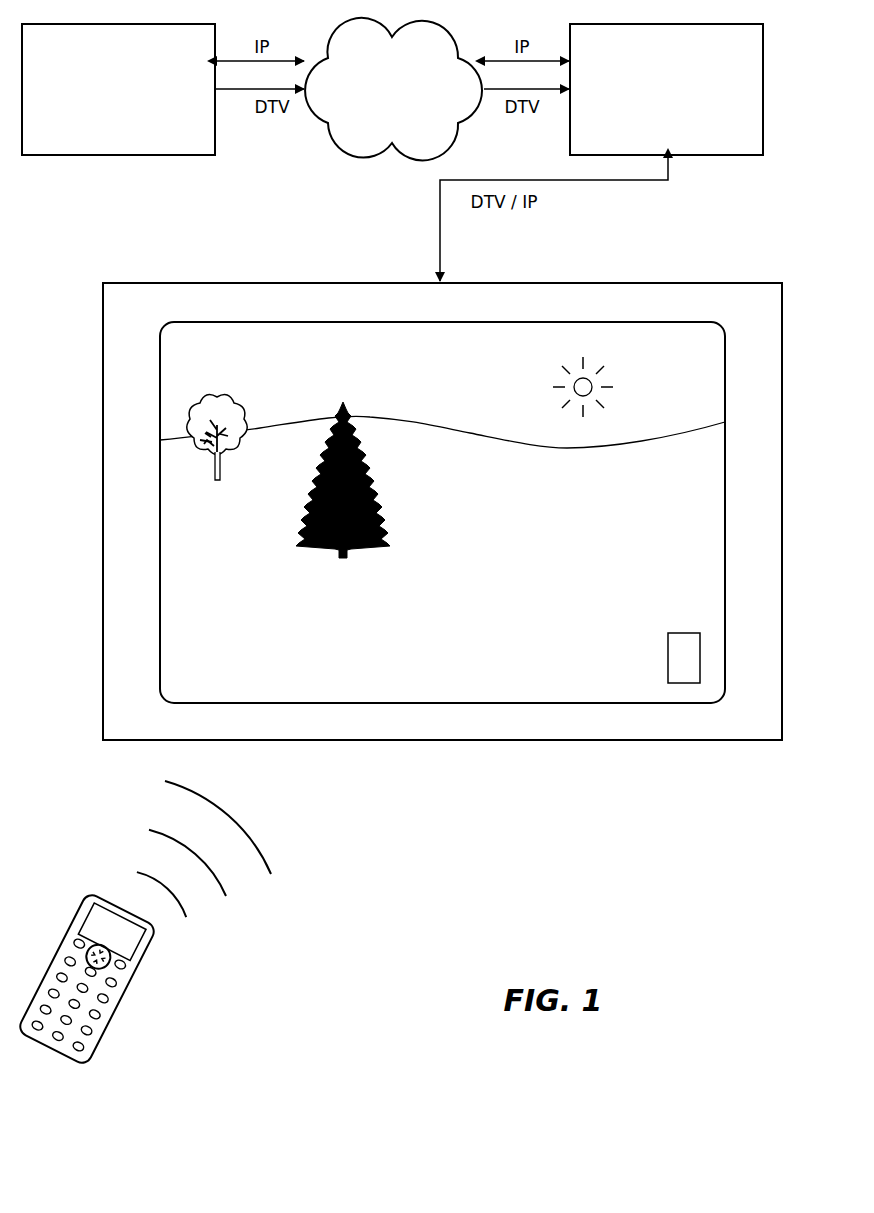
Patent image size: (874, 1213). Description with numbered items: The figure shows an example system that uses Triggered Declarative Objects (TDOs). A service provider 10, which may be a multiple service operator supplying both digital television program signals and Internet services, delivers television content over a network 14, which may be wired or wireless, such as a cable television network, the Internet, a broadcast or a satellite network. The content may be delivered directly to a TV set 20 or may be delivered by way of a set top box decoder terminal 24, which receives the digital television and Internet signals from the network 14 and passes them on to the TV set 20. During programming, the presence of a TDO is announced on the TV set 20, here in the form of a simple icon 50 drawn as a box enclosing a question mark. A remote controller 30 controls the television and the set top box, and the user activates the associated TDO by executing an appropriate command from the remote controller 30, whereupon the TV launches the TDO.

The service provider 10 is at (118, 155).
The network 14 is at (368, 158).
The set top box (STB) decoder terminal 24 is at (732, 155).
The TV set 20 is at (442, 525).
The icon 50 is at (685, 683).
The remote controller 30 is at (123, 998).